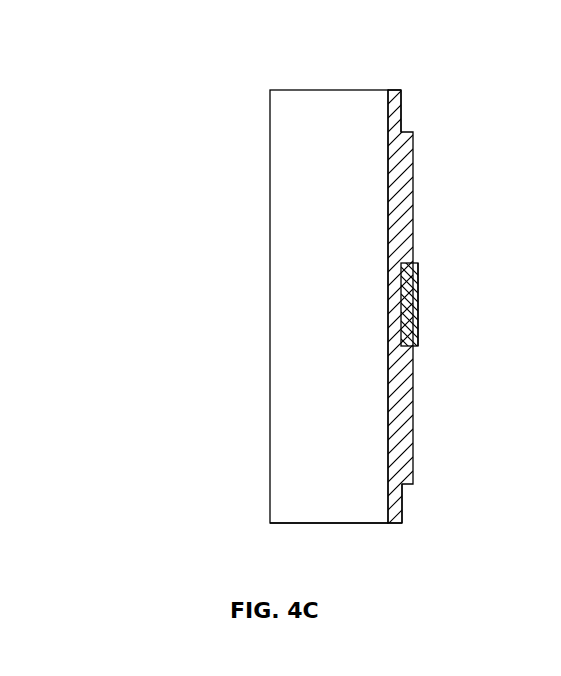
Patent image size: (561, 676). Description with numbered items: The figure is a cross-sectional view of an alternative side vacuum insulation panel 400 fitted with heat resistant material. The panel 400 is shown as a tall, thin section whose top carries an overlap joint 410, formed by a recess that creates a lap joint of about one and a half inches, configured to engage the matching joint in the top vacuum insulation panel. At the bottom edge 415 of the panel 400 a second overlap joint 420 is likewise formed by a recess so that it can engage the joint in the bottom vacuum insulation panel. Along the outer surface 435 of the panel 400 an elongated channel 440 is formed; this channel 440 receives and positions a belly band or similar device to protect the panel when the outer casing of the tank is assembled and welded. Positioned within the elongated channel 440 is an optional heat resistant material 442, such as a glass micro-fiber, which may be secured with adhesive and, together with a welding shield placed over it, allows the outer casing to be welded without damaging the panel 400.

The side vacuum insulation panel 400 is at (90, 71).
The overlap joint 410 is at (403, 105).
The bottom edge 415 is at (291, 525).
The overlap joint 420 is at (408, 506).
The outer surface 435 is at (413, 150).
The elongated channel 440 is at (418, 310).
The heat resistant material 442 is at (418, 288).